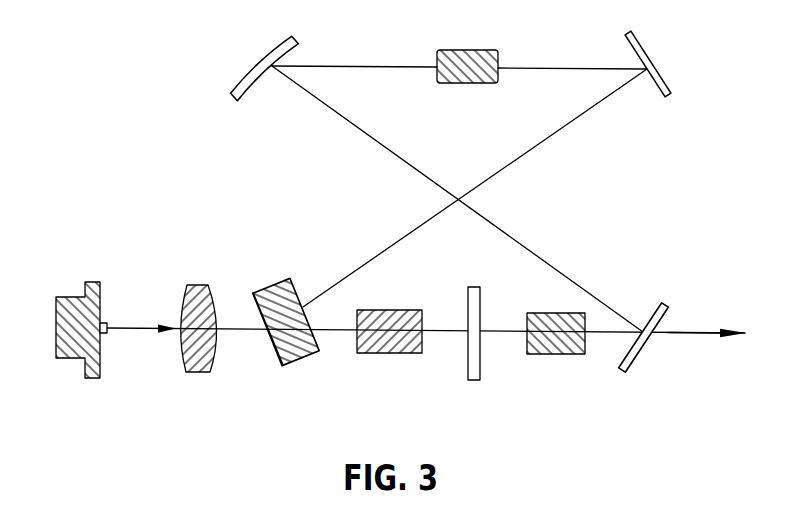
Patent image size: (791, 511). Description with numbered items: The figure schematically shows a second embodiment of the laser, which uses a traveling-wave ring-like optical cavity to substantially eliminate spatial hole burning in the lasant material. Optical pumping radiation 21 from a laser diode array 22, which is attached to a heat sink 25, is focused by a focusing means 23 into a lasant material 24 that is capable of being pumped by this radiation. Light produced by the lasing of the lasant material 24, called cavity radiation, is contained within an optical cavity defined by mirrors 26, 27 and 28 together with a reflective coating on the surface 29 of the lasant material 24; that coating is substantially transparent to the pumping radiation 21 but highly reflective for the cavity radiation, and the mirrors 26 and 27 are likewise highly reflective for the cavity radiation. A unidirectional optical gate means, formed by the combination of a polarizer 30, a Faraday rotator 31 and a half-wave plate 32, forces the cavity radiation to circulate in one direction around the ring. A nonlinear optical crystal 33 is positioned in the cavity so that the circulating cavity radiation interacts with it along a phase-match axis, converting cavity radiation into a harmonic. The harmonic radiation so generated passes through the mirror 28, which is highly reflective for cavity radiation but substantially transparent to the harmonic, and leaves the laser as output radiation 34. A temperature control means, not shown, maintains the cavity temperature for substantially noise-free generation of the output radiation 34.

The optical pumping radiation 21 is at (150, 332).
The laser diode array 22 is at (107, 322).
The focusing means 23 is at (205, 372).
The lasant material 24 is at (300, 360).
The heat sink 25 is at (72, 360).
The mirror 26 is at (238, 83).
The mirror 27 is at (666, 83).
The mirror 28 is at (657, 305).
The surface of lasant material 29 is at (253, 307).
The polarizer 30 is at (470, 50).
The Faraday rotator 31 is at (390, 355).
The half-wave plate 32 is at (468, 372).
The nonlinear optical crystal 33 is at (555, 357).
The output radiation 34 is at (695, 337).